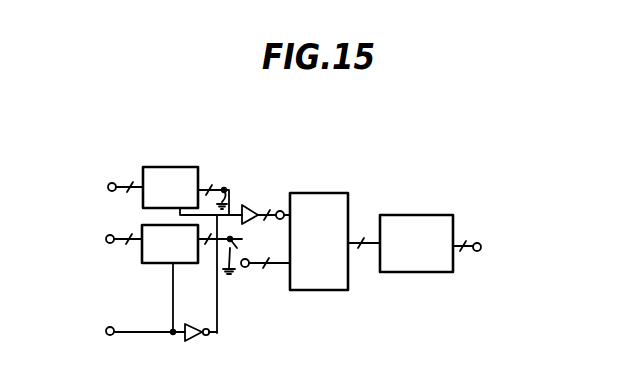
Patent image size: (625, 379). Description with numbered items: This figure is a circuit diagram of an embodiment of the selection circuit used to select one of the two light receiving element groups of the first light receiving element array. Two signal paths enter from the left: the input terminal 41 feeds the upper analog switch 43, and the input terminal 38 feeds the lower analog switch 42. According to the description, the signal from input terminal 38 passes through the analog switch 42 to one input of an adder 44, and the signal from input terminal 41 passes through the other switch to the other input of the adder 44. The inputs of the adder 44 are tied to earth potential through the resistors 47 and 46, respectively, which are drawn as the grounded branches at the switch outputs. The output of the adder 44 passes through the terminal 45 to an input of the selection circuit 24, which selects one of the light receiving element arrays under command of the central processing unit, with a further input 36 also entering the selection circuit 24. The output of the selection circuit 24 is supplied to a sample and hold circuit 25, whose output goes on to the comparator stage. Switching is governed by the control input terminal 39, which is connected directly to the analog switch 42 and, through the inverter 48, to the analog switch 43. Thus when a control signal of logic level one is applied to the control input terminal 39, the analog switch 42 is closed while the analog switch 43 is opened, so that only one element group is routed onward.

The input terminal 41 is at (106, 187).
The input terminal 38 is at (103, 239).
The analog switch 43 is at (154, 166).
The analog switch 42 is at (166, 264).
The resistor 47 is at (224, 188).
The adder 44 is at (249, 205).
The terminal 45 is at (281, 209).
The resistor 46 is at (278, 253).
The input terminal 36 is at (245, 268).
The selection circuit 24 is at (330, 291).
The sample and hold circuit 25 is at (423, 215).
The control input terminal 39 is at (109, 336).
The inverter 48 is at (195, 343).